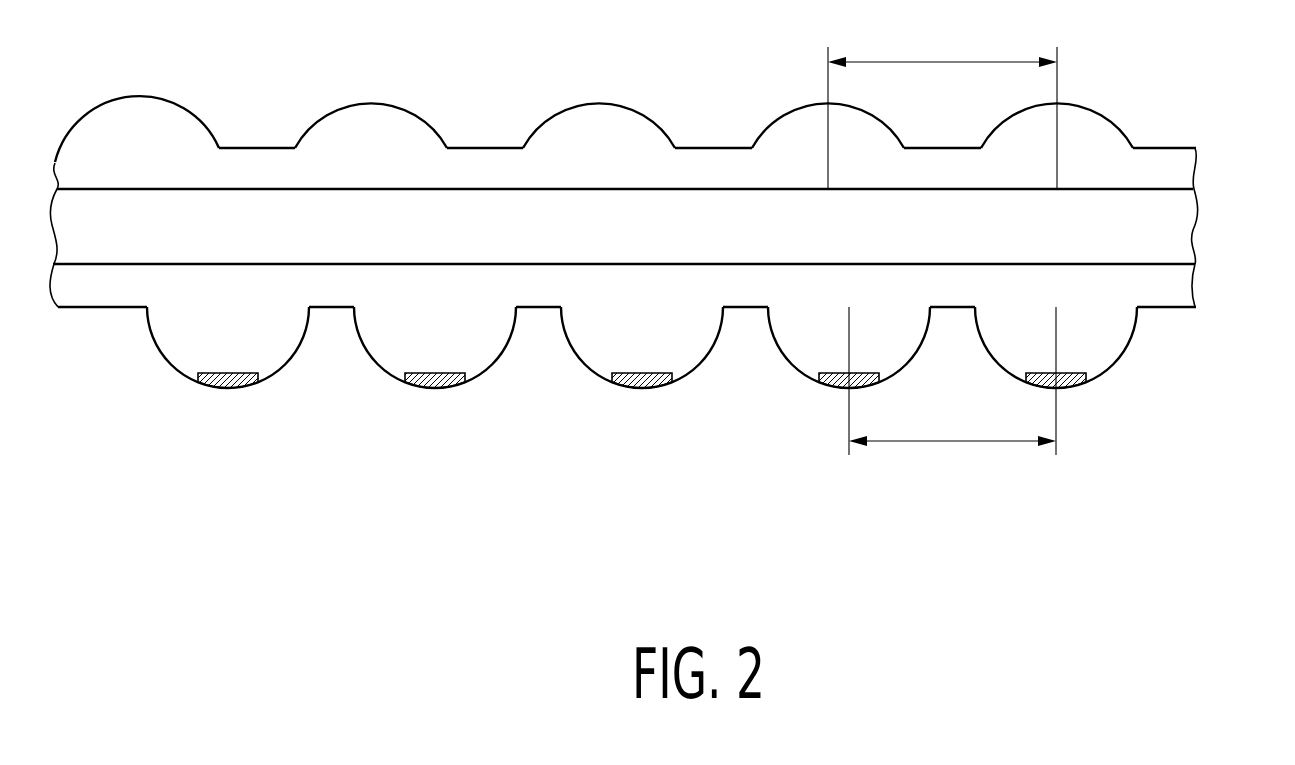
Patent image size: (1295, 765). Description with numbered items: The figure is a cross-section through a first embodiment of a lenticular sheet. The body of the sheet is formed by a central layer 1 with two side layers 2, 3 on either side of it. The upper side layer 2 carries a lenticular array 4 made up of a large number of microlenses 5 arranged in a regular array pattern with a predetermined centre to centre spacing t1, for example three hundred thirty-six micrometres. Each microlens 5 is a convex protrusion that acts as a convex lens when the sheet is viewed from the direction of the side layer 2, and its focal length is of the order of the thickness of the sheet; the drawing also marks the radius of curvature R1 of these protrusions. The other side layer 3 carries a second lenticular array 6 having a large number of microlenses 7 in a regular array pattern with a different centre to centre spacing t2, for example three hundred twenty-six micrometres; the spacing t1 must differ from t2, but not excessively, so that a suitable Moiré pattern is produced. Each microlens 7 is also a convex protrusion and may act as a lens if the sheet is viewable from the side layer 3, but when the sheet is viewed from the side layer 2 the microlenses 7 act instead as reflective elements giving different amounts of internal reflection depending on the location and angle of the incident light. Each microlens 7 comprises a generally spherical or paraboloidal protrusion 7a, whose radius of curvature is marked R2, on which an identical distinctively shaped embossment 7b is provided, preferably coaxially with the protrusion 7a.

The central layer 1 is at (1172, 222).
The side layer 2 is at (665, 111).
The side layer 3 is at (664, 370).
The lenticular array 4 is at (1167, 147).
The microlens 5 is at (618, 95).
The lenticular array 6 is at (1167, 308).
The microlens 7 is at (673, 391).
The protrusion 7a is at (673, 391).
The embossment 7b is at (642, 388).
The radius of curvature of convex lens R1 is at (1108, 110).
The radius of curvature of recess R2 is at (1102, 379).
The centre to centre spacing t1 is at (942, 106).
The centre to centre spacing t2 is at (952, 381).